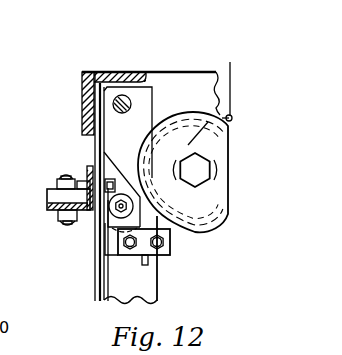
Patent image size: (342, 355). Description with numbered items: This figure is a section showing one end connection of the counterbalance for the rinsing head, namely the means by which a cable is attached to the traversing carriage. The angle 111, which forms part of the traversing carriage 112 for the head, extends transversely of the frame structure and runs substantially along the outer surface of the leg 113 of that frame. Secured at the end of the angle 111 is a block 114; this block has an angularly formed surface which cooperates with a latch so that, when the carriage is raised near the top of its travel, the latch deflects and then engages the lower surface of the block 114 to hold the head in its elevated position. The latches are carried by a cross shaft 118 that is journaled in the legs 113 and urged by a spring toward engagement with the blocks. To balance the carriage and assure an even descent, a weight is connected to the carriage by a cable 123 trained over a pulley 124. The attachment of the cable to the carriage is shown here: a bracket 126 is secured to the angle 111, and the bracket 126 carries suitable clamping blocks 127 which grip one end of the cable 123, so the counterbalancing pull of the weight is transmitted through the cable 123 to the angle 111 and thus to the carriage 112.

The angle 111 is at (52, 217).
The traversing carriage 112 is at (52, 176).
The leg 113 is at (108, 275).
The block 114 is at (47, 197).
The cross shaft 118 is at (131, 102).
The cable 123 is at (221, 83).
The pulley 124 is at (190, 205).
The bracket 126 is at (108, 228).
The clamping block 127 is at (157, 255).